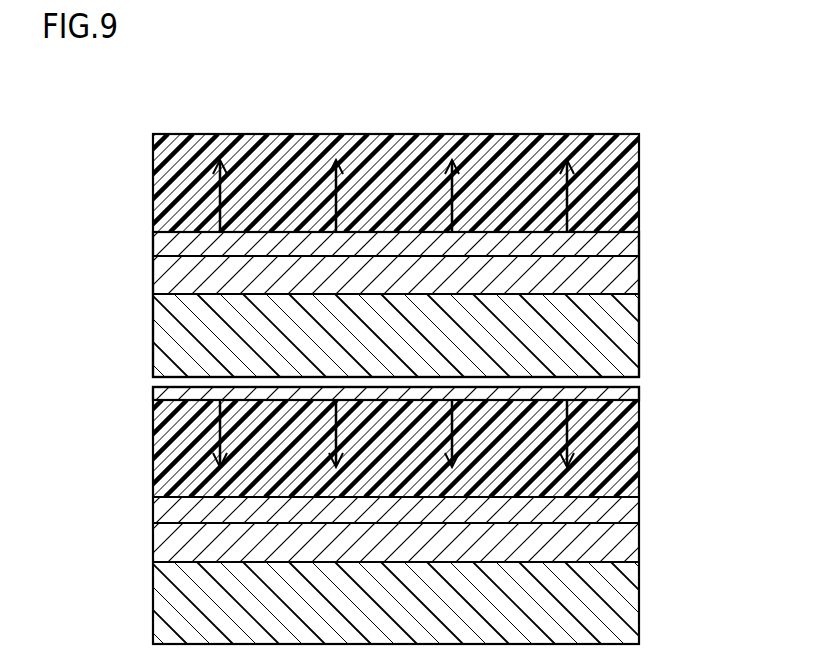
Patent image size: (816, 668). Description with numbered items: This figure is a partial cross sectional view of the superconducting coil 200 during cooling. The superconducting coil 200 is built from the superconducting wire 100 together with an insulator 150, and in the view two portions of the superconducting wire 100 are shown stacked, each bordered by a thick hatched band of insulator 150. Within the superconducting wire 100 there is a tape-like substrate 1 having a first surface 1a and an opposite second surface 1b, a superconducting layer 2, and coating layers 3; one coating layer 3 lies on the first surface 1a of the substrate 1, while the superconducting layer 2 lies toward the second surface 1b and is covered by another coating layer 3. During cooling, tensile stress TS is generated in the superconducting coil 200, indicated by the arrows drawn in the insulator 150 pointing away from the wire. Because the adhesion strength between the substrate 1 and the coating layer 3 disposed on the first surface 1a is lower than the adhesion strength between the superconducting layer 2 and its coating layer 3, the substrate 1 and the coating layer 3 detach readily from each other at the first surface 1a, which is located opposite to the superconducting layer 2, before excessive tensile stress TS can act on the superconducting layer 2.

The superconducting coil 200 is at (627, 107).
The insulator 150 is at (158, 187).
The superconducting wire 100 is at (699, 233).
The coating layer 3 is at (636, 242).
The superconducting layer 2 is at (636, 275).
The substrate 1 is at (636, 335).
The first surface 1a is at (212, 375).
The second surface 1b is at (265, 295).
The tensile stress TS is at (572, 432).